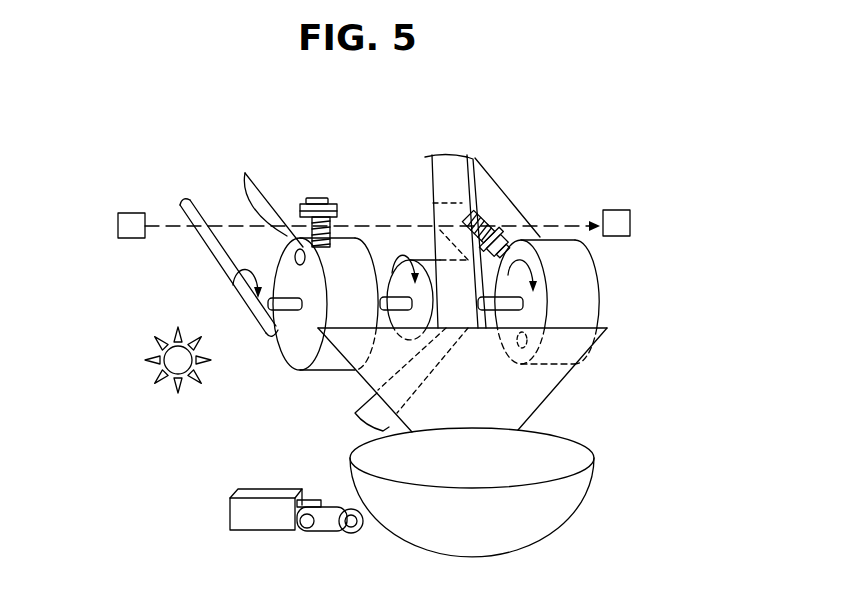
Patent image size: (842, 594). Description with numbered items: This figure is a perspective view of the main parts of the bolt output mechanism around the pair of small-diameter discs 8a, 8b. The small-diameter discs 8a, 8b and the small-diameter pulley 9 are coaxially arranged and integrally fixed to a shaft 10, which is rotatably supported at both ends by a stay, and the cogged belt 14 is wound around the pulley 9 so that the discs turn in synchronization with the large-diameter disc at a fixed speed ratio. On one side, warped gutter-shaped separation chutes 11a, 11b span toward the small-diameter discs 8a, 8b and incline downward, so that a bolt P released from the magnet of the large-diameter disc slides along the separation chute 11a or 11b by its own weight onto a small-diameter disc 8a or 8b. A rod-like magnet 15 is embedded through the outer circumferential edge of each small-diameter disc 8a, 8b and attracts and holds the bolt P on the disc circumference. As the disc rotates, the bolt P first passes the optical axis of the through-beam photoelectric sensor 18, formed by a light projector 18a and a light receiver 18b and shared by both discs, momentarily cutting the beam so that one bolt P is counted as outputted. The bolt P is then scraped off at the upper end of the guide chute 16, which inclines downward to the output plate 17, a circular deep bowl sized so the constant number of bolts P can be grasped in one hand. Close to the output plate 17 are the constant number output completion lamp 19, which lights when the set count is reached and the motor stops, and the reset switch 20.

The small-diameter disc 8a is at (298, 350).
The small-diameter disc 8b is at (577, 285).
The small-diameter pulley 9 is at (425, 263).
The shaft 10 is at (288, 318).
The separation chute 11a is at (207, 245).
The separation chute 11b is at (520, 205).
The cogged belt 14 is at (450, 172).
The rod-like magnet 15 is at (247, 210).
The guide chute 16 is at (530, 393).
The output plate 17 is at (553, 508).
The photoelectric sensor 18 is at (412, 171).
The light projector 18a is at (122, 213).
The light receiver 18b is at (630, 223).
The constant number output completion lamp 19 is at (153, 366).
The reset switch 20 is at (265, 517).
The bolt P is at (318, 200).